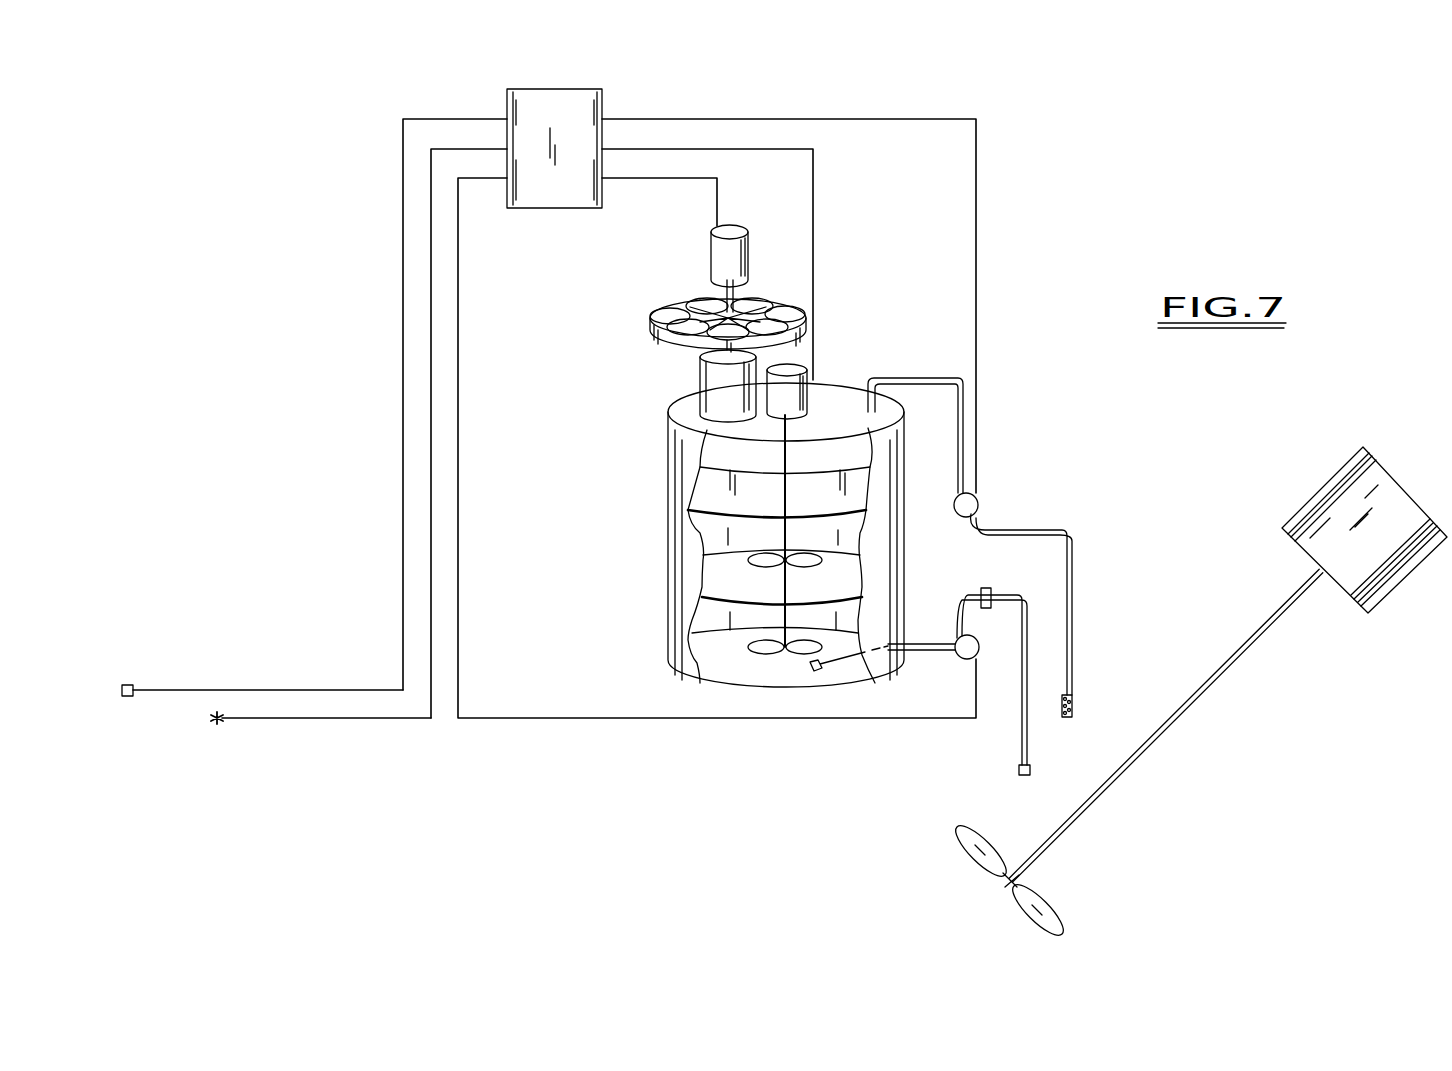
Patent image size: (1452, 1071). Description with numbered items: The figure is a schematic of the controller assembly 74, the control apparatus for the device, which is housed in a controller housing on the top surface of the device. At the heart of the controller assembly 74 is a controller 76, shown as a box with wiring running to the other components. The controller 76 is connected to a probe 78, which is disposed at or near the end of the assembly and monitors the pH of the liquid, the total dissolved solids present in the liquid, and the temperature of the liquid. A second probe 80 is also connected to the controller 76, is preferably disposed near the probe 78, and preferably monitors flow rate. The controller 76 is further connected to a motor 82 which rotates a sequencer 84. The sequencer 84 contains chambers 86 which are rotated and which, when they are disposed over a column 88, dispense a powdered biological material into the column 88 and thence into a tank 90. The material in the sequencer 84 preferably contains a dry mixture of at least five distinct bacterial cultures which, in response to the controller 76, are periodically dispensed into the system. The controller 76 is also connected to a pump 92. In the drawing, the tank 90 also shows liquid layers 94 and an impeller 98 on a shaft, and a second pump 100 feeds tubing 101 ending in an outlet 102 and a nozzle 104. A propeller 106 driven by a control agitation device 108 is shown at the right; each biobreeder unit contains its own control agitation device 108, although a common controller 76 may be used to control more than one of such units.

The controller assembly 74 is at (880, 86).
The controller 76 is at (585, 115).
The probe 78 is at (113, 672).
The probe 80 is at (217, 728).
The motor 82 is at (748, 250).
The sequencer 84 is at (672, 338).
The chambers 86 is at (695, 306).
The column 88 is at (700, 380).
The tank 90 is at (693, 440).
The pump 92 is at (973, 505).
The liquid layers 94 is at (690, 515).
The impeller 98 is at (780, 580).
The pump 100 is at (1022, 708).
The tubing 101 is at (1076, 583).
The outlet 102 is at (1018, 772).
The nozzle 104 is at (1076, 705).
The propeller 106 is at (1046, 910).
The control agitation device 108 is at (1328, 495).